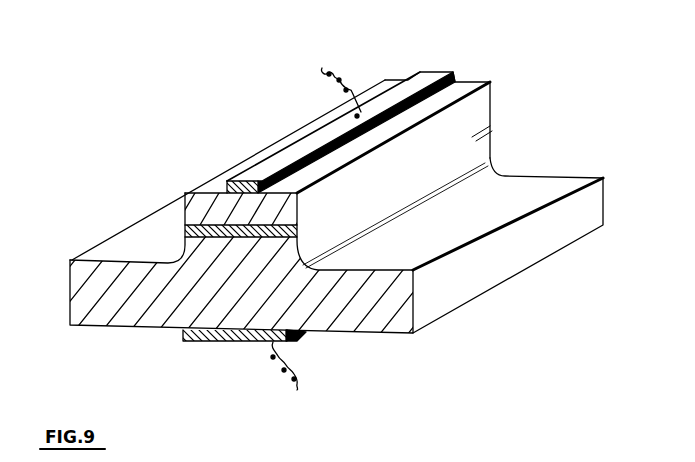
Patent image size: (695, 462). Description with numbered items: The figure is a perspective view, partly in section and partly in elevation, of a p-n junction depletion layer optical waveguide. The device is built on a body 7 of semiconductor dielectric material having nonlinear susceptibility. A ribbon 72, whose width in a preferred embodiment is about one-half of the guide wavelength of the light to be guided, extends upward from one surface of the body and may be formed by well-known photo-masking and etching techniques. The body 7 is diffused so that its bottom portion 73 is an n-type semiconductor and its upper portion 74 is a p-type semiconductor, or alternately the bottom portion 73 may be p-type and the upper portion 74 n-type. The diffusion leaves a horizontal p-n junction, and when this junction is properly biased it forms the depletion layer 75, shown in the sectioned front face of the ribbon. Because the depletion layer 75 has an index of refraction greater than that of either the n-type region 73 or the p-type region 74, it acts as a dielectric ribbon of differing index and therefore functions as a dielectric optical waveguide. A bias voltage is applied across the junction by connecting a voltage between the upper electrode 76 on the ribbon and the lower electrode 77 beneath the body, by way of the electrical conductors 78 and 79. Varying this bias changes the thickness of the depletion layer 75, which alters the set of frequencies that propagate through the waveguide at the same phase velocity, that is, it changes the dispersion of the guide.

The body 7 is at (210, 174).
The ribbon 72 is at (347, 219).
The bottom portion 73 is at (495, 210).
The upper portion 74 is at (458, 112).
The depletion layer 75 is at (491, 123).
The electrode 76 is at (427, 78).
The electrode 77 is at (288, 341).
The electrical conductor 78 is at (346, 86).
The electrical conductor 79 is at (278, 358).